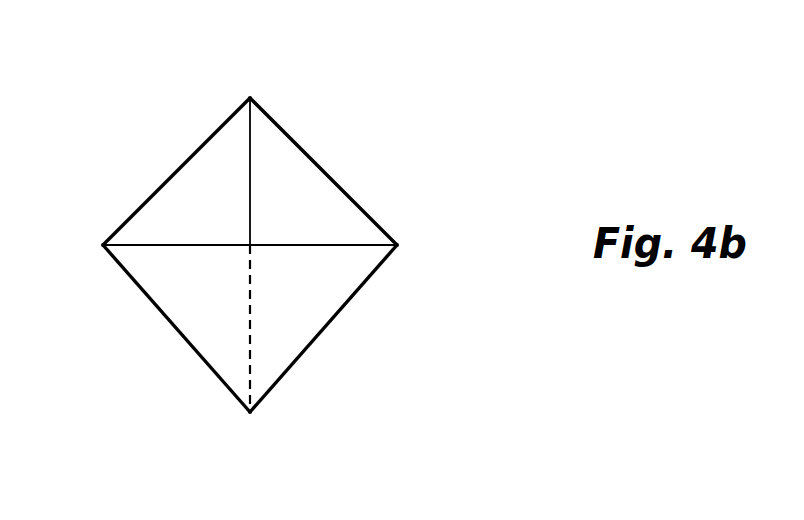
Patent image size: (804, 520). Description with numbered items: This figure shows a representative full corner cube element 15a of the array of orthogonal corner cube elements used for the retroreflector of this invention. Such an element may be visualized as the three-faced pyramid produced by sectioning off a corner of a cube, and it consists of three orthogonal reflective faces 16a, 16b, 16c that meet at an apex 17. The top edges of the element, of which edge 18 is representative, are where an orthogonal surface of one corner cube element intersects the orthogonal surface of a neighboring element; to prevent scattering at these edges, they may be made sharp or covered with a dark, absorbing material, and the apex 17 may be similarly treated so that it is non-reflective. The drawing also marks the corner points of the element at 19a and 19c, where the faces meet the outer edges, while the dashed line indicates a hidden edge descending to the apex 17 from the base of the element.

The corner cube element 15a is at (353, 343).
The face 16a is at (203, 316).
The face 16b is at (313, 192).
The face 16c is at (212, 180).
The apex 17 is at (250, 412).
The edge 18 is at (152, 195).
The vertices of element 19a is at (251, 98).
The left vertex 19c is at (103, 245).